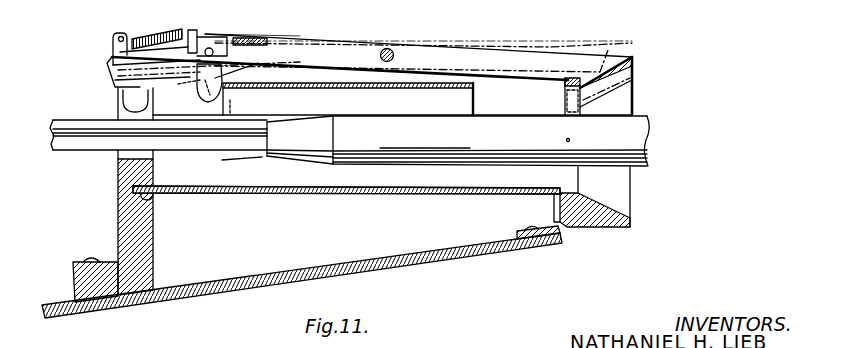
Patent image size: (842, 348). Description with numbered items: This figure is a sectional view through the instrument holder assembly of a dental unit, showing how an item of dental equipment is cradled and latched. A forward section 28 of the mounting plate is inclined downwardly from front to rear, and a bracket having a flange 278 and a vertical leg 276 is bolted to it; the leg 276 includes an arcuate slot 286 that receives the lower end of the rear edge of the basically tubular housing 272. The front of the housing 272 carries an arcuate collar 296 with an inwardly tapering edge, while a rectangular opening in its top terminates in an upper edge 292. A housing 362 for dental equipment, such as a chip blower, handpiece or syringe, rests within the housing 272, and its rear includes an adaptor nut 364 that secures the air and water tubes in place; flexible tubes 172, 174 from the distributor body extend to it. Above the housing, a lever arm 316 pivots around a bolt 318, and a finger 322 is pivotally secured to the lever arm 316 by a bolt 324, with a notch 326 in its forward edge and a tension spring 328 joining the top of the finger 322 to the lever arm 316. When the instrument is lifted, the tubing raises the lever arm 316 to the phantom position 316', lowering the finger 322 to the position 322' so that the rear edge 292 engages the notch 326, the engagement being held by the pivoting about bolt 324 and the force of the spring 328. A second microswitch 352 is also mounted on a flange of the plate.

The forward section 28 is at (283, 272).
The flexible tube 172 is at (89, 124).
The flexible tube 174 is at (88, 142).
The housing 272 is at (366, 193).
The vertical leg 276 is at (154, 242).
The flange 278 is at (72, 282).
The arcuate slot 286 is at (169, 206).
The upper edge 292 is at (392, 99).
The arcuate collar 296 is at (631, 212).
The lever arm 316 is at (375, 59).
The lever arm raised position 316' is at (423, 28).
The bolt 318 is at (393, 49).
The finger 322 is at (183, 77).
The finger lowered position 322' is at (193, 89).
The bolt 324 is at (212, 47).
The notch 326 is at (258, 63).
The tension spring 328 is at (174, 29).
The second microswitch 352 is at (279, 18).
The housing 362 is at (655, 135).
The adaptor nut 364 is at (222, 160).